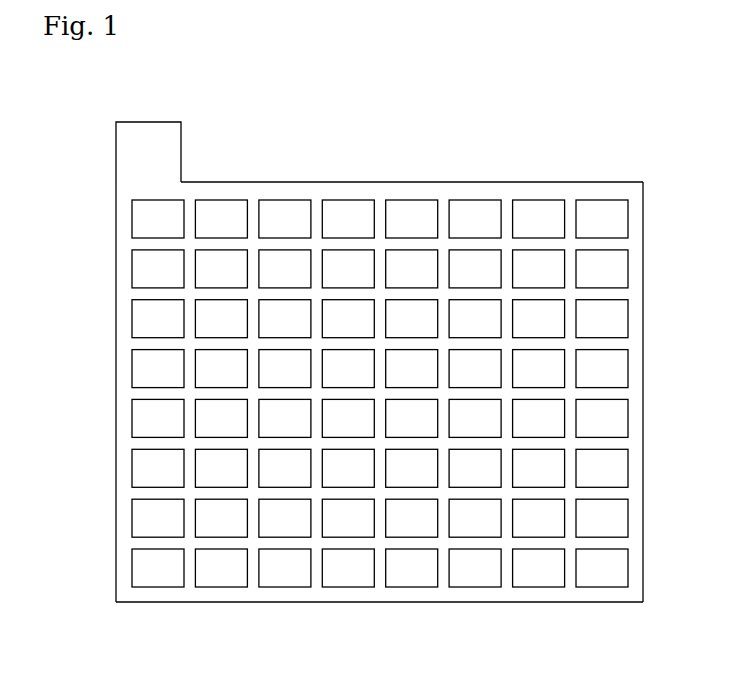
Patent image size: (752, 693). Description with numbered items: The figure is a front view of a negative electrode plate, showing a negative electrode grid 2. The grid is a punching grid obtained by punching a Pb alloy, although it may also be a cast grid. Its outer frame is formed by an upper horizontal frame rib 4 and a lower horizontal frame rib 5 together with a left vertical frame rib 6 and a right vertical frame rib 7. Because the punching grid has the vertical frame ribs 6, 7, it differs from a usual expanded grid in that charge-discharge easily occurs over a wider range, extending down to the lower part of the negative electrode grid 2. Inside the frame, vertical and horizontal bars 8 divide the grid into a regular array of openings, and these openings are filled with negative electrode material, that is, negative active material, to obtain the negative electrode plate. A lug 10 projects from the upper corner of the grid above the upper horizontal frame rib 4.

The negative electrode grid 2 is at (374, 400).
The upper horizontal frame rib 4 is at (433, 188).
The lower horizontal frame rib 5 is at (478, 597).
The left vertical frame rib 6 is at (118, 437).
The right vertical frame rib 7 is at (635, 386).
The bar 8 is at (290, 314).
The lug 10 is at (172, 153).